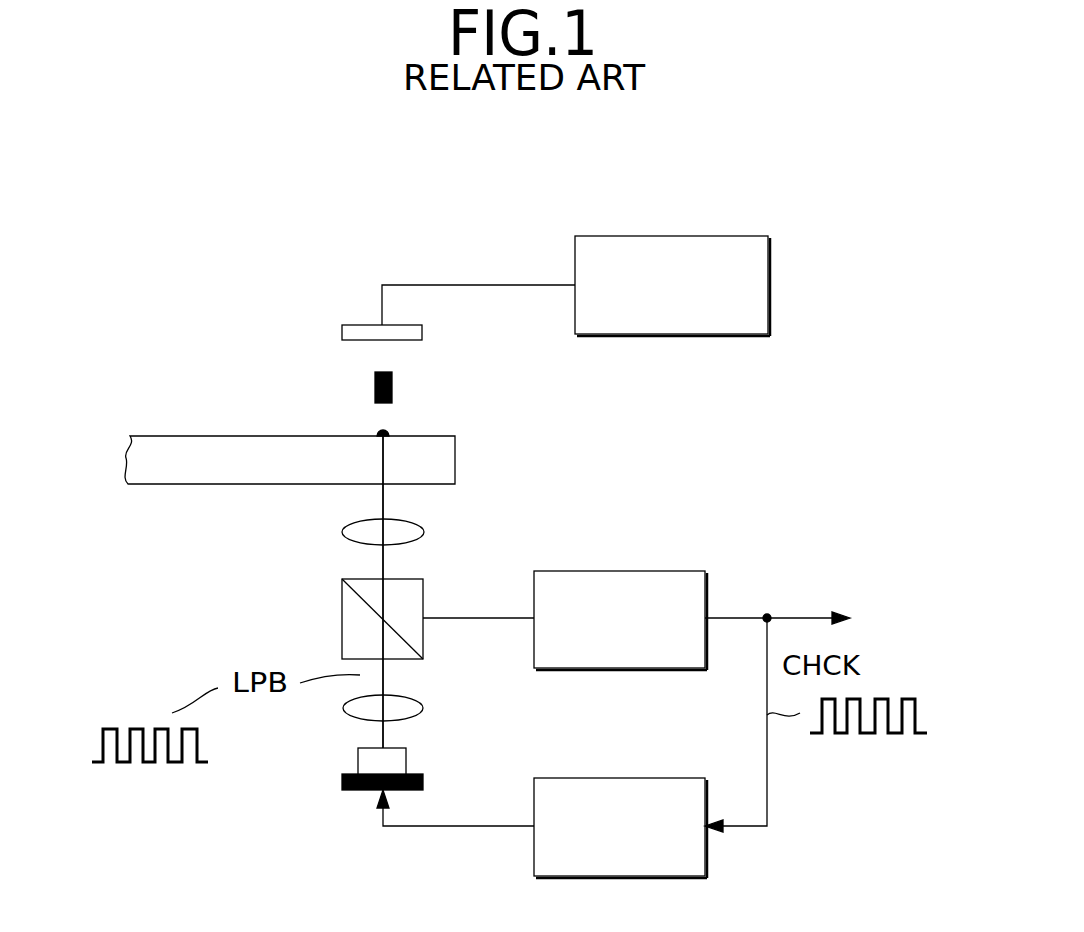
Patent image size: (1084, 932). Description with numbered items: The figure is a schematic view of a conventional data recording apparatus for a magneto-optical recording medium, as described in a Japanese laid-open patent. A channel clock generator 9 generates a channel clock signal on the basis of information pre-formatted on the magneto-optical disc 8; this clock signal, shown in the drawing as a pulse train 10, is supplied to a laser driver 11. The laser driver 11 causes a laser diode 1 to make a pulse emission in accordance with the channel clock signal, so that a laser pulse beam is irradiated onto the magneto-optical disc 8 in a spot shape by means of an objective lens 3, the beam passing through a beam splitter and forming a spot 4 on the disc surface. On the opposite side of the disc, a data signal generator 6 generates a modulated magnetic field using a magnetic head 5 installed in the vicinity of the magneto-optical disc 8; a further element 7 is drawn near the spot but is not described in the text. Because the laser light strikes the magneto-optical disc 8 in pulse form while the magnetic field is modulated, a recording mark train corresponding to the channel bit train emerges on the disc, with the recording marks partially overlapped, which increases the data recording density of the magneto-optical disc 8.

The laser diode 1 is at (340, 782).
The objective lens 3 is at (423, 526).
The beam spot 4 is at (380, 434).
The magnetic head 5 is at (423, 332).
The data signal generator 6 is at (640, 236).
The photodetector 7 is at (392, 388).
The magneto-optical disc 8 is at (222, 436).
The channel clock generator 9 is at (640, 571).
The channel clock pulse train 10 is at (922, 707).
The laser driver 11 is at (640, 778).